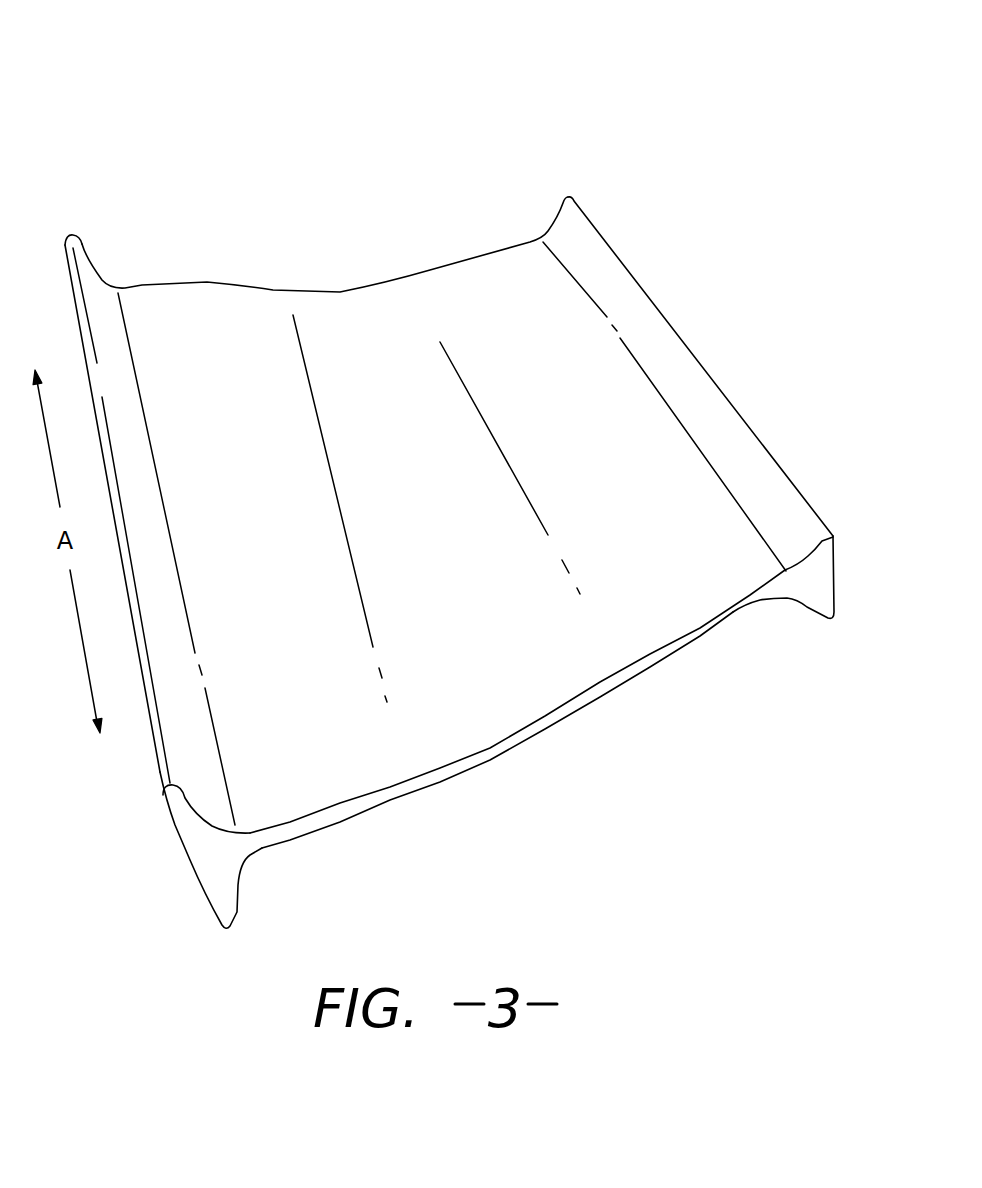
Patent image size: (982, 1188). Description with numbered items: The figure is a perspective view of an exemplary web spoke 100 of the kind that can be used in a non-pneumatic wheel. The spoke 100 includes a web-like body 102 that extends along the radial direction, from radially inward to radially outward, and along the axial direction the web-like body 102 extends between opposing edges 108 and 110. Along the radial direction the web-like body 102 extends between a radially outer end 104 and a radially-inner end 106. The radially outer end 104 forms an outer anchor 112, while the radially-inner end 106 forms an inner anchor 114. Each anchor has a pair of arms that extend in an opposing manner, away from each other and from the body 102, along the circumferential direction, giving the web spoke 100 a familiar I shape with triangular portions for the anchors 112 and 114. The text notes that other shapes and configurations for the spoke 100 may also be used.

The spoke 100 is at (513, 107).
The web-like body 102 is at (425, 296).
The radially outer end 104 is at (170, 845).
The radially-inner end 106 is at (833, 630).
The edge 108 is at (486, 758).
The edge 110 is at (305, 289).
The outer anchor 112 is at (222, 882).
The inner anchor 114 is at (817, 575).